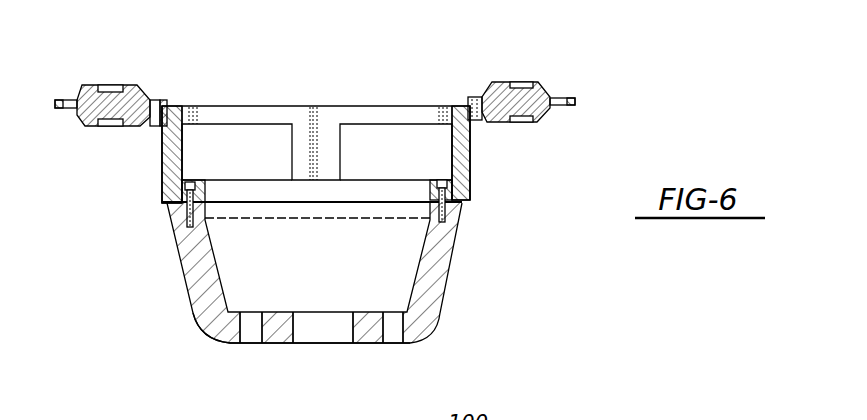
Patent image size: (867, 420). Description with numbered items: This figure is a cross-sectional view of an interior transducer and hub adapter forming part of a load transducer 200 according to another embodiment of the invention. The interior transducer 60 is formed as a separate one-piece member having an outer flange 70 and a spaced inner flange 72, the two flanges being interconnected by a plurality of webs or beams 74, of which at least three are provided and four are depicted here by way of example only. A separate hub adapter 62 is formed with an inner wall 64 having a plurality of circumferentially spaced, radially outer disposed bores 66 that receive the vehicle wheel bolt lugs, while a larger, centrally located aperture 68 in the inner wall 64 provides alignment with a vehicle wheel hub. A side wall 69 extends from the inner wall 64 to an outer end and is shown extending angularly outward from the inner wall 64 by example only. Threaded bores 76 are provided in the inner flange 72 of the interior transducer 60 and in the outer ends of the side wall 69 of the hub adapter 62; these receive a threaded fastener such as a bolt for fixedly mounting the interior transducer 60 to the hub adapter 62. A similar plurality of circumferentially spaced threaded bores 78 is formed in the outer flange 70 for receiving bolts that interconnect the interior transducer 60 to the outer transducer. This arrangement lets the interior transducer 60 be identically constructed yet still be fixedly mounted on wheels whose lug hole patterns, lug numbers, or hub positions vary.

The interior transducer 60 is at (190, 92).
The hub adapter 62 is at (185, 296).
The inner wall 64 is at (232, 345).
The bores 66 is at (250, 332).
The aperture 68 is at (352, 332).
The side wall 69 is at (433, 280).
The outer flange 70 is at (172, 107).
The inner flange 72 is at (163, 206).
The webs 74 is at (312, 156).
The threaded bores 76 is at (178, 198).
The threaded bores 78 is at (477, 120).
The load transducer 200 is at (122, 81).